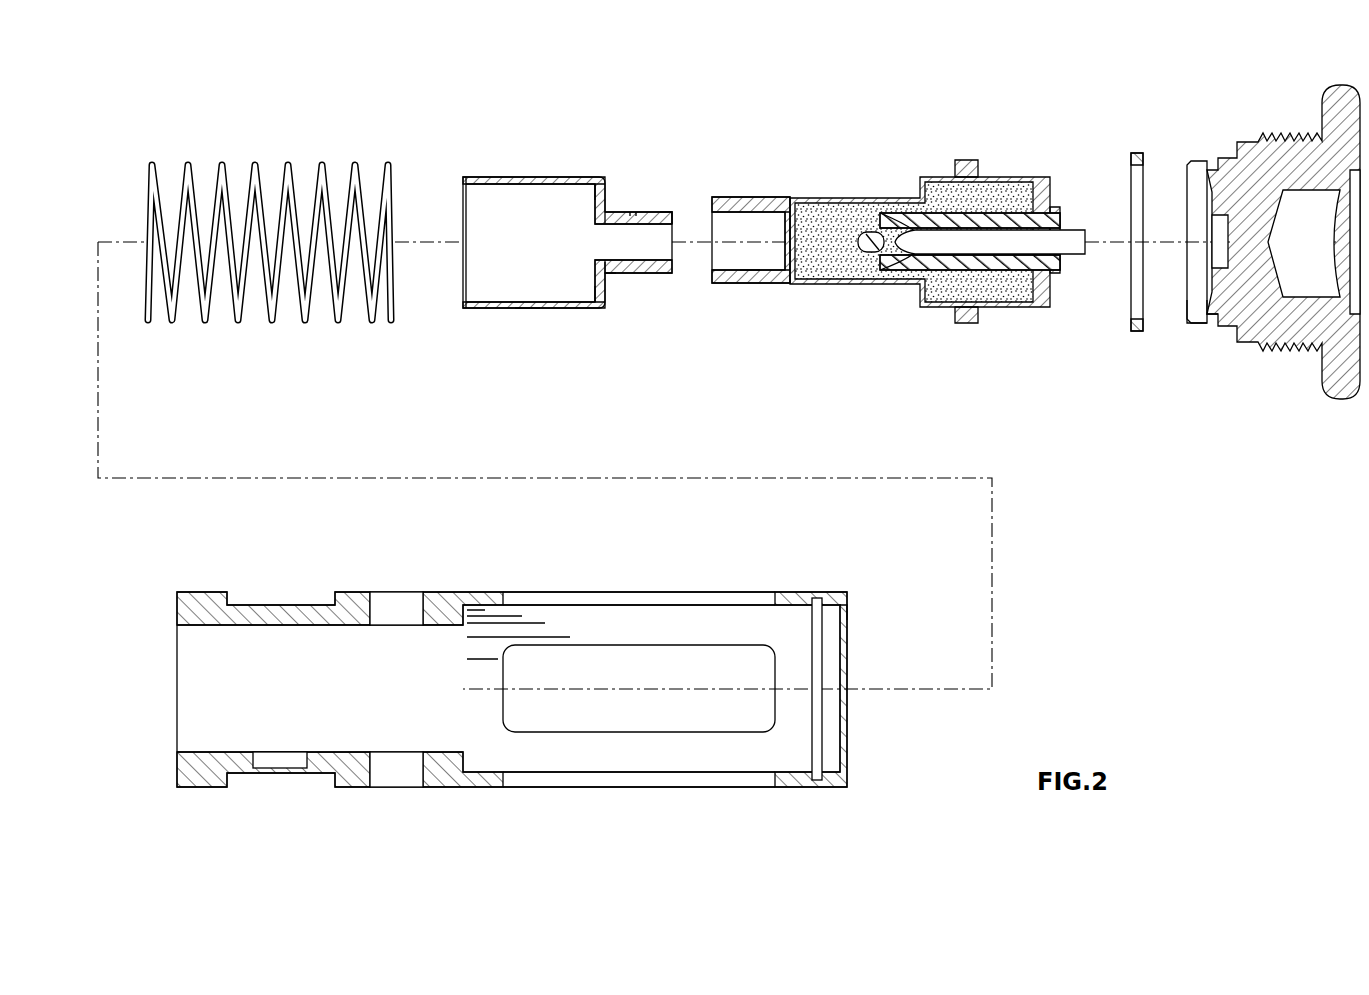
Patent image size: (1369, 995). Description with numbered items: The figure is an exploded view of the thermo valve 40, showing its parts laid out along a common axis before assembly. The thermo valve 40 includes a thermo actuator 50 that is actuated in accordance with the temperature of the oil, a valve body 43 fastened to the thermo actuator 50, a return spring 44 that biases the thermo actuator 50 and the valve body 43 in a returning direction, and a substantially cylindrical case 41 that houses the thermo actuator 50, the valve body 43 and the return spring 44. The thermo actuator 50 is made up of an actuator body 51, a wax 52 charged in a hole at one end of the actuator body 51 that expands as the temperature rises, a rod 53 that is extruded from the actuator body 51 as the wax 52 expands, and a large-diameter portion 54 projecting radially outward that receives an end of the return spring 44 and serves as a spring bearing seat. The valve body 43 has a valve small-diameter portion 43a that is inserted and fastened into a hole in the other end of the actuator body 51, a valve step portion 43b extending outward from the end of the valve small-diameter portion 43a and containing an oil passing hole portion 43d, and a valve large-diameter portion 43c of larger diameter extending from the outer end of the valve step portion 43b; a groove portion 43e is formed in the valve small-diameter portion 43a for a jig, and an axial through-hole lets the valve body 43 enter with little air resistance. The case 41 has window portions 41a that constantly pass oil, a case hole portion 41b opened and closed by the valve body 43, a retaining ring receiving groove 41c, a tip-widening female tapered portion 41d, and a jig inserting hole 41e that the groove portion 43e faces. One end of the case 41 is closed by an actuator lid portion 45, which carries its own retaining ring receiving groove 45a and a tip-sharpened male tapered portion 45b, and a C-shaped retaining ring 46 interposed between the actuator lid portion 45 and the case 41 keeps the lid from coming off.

The thermo valve 40 is at (1097, 590).
The case 41 is at (460, 787).
The window portions 41a is at (655, 598).
The case hole portion 41b is at (283, 760).
The retaining ring receiving groove 41c is at (818, 728).
The female tapered portion 41d is at (848, 612).
The jig inserting hole 41e is at (397, 605).
The valve body 43 is at (505, 177).
The valve small-diameter portion 43a is at (667, 212).
The valve step portion 43b is at (610, 277).
The valve large-diameter portion 43c is at (527, 308).
The oil passing hole portion 43d is at (592, 196).
The groove portion 43e is at (633, 212).
The return spring 44 is at (256, 162).
The actuator lid portion 45 is at (1288, 134).
The retaining ring receiving groove 45a is at (1212, 316).
The male tapered portion 45b is at (1190, 323).
The C-shaped retaining ring 46 is at (1137, 153).
The thermo actuator 50 is at (898, 200).
The actuator body 51 is at (845, 197).
The wax 52 is at (895, 213).
The rod 53 is at (962, 241).
The large-diameter portion 54 is at (971, 218).